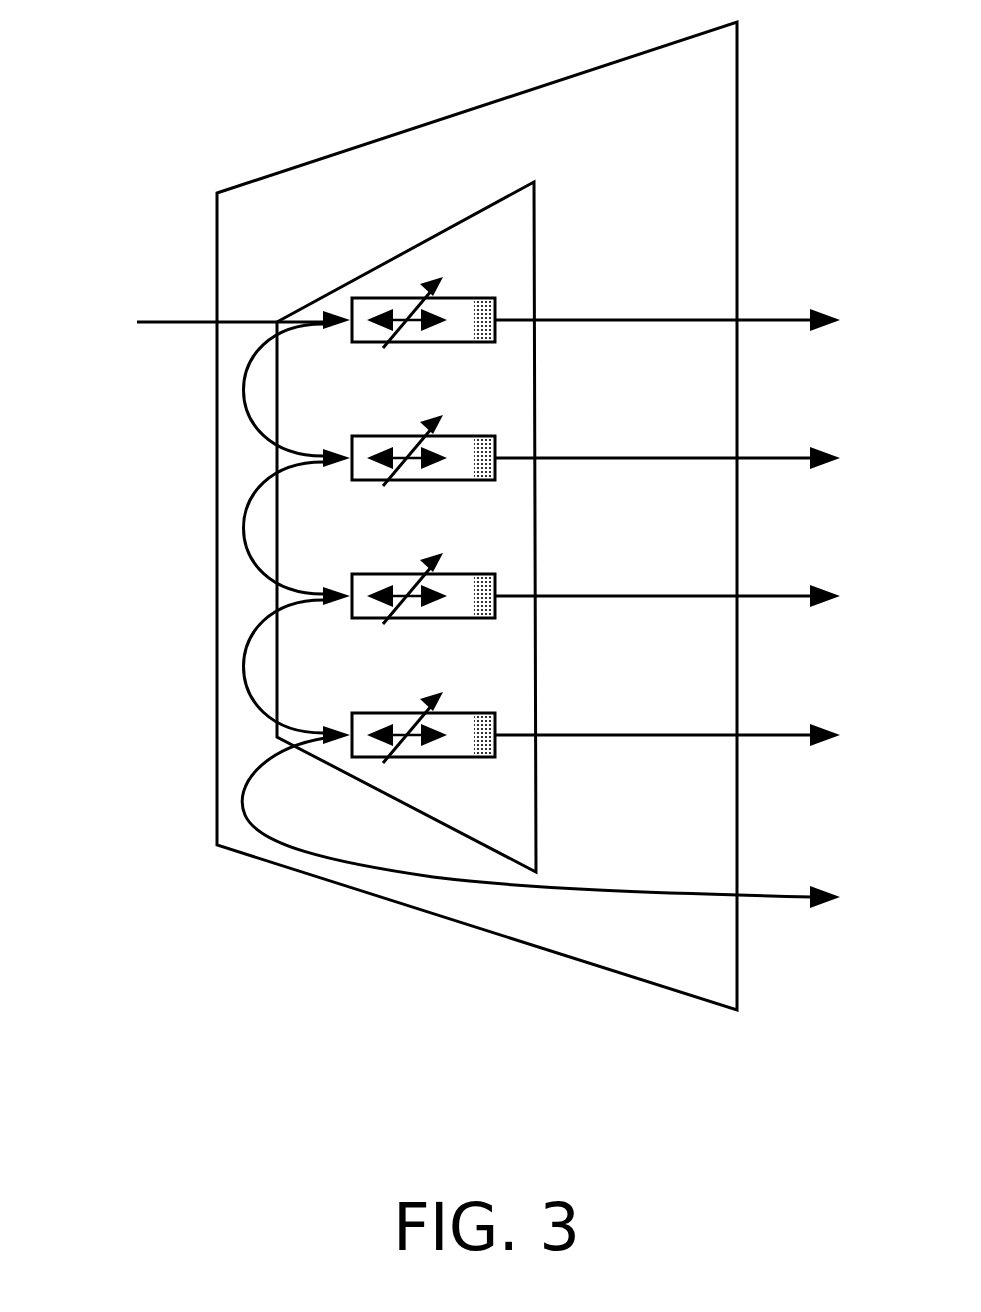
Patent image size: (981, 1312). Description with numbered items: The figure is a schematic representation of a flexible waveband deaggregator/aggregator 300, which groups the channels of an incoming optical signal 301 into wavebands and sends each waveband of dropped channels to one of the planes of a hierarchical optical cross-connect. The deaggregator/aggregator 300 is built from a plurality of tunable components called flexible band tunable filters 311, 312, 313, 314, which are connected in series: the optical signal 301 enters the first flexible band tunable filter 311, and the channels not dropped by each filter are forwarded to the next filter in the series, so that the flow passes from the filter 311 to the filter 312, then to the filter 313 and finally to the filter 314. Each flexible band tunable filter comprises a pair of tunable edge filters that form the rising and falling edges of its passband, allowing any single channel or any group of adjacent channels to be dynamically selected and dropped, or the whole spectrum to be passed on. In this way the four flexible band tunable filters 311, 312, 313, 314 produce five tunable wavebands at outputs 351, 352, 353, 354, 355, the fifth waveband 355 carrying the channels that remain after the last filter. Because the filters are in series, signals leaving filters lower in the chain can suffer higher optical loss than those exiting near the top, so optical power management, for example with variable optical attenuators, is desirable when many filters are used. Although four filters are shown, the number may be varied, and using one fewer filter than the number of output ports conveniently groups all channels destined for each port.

The flexible waveband deaggregator/aggregator 300 is at (477, 973).
The optical signal 301 is at (186, 292).
The flexible band tunable filter 311 is at (423, 301).
The flexible band tunable filter 312 is at (423, 439).
The flexible band tunable filter 313 is at (423, 577).
The flexible band tunable filter 314 is at (423, 716).
The tunable waveband 351 is at (706, 320).
The tunable waveband 352 is at (706, 458).
The tunable waveband 353 is at (706, 596).
The tunable waveband 354 is at (706, 736).
The tunable waveband 355 is at (580, 828).